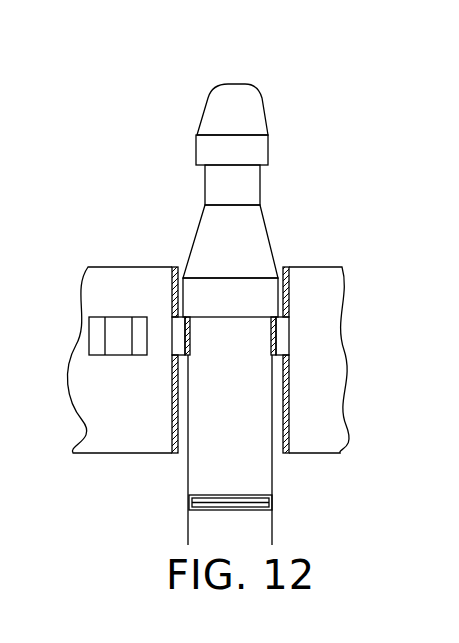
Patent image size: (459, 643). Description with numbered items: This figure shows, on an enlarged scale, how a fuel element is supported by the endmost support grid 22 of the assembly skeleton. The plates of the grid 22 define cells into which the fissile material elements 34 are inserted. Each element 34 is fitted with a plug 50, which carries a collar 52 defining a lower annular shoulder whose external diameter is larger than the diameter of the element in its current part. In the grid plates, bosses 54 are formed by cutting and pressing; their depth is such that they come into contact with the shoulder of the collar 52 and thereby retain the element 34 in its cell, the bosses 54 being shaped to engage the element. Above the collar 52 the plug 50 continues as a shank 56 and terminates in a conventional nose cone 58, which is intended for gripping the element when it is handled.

The endmost support grid 22 is at (330, 363).
The fissile material element 34 is at (253, 467).
The plug 50 is at (250, 234).
The collar 52 is at (245, 290).
The boss 54 is at (120, 338).
The shank 56 is at (240, 188).
The nose cone 58 is at (250, 118).